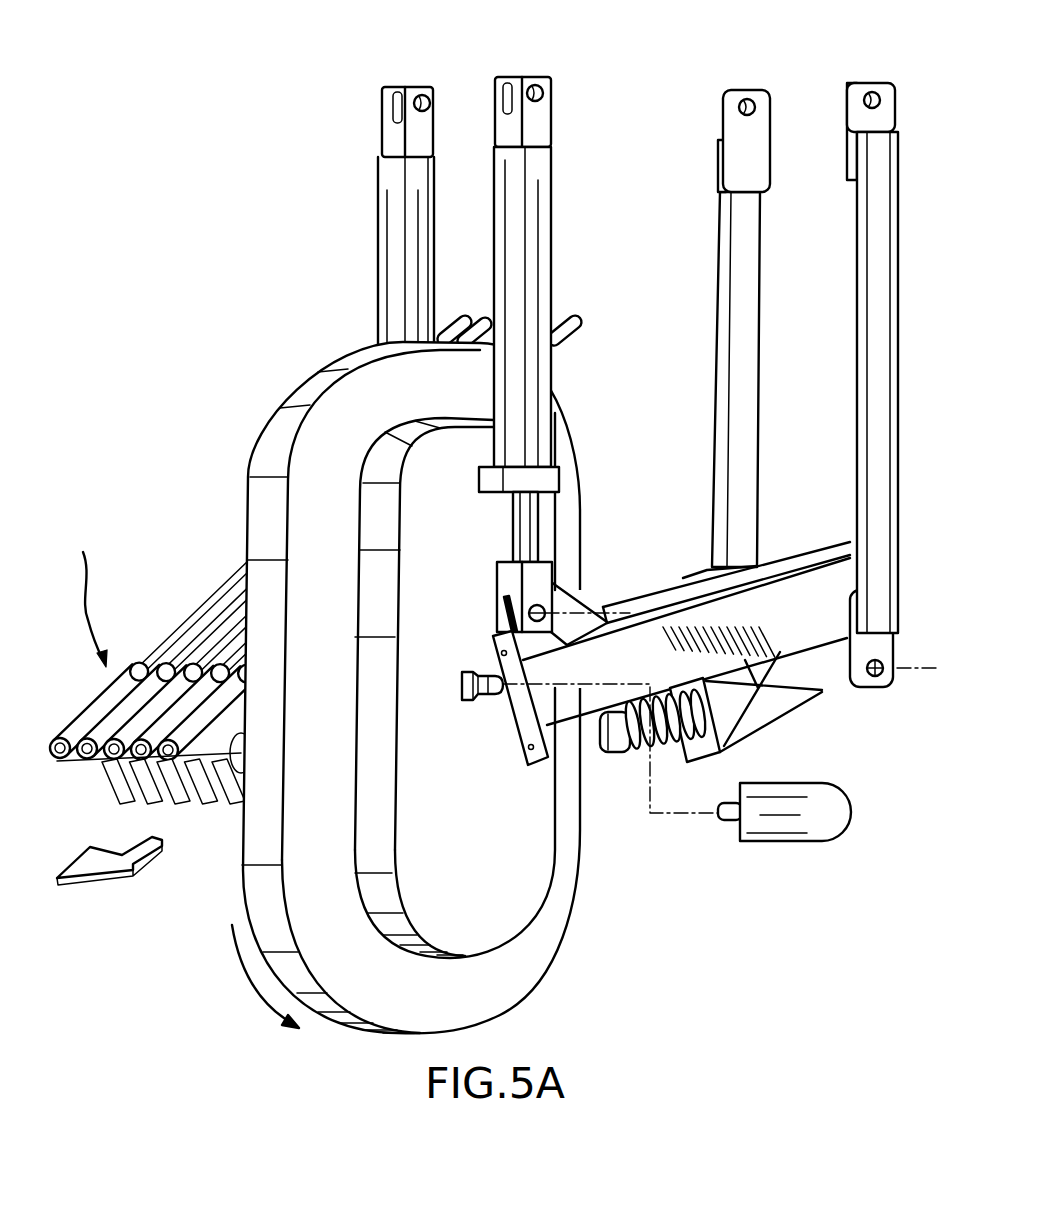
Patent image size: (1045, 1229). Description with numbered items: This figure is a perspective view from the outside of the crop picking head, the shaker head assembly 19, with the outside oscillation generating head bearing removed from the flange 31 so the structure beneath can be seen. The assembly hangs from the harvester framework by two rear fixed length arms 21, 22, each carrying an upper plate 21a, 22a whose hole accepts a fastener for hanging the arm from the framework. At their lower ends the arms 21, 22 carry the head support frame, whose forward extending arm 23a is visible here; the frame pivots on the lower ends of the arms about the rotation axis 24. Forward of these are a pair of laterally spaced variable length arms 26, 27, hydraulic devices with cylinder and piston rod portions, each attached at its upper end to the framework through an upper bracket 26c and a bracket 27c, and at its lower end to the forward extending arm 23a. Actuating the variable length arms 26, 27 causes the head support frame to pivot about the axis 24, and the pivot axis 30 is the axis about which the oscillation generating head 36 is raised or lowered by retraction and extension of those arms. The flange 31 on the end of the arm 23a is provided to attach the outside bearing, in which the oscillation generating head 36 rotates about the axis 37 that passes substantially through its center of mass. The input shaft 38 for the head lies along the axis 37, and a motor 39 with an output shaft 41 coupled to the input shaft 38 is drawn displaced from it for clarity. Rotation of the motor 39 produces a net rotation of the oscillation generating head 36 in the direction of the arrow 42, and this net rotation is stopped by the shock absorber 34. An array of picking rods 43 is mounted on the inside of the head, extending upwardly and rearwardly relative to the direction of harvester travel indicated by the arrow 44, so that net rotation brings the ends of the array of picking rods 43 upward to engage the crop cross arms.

The shaker head assembly 19 is at (491, 528).
The rear fixed length arm 21 is at (857, 400).
The upper plate 21a is at (747, 90).
The rear fixed length arm 22 is at (760, 300).
The upper plate 22a is at (873, 83).
The forward extending arm 23a is at (593, 707).
The rotation axis 24 is at (921, 667).
The front variable length arm 26 is at (552, 240).
The upper bracket 26c is at (551, 110).
The front variable length arm 27 is at (378, 257).
The bracket 27c is at (382, 130).
The pivot axis 30 is at (245, 622).
The flange 31 is at (545, 758).
The shock absorber 34 is at (650, 745).
The oscillation generating head 36 is at (330, 362).
The axis 37 is at (663, 815).
The input shaft 38 is at (470, 700).
The motor 39 is at (832, 827).
The output shaft 41 is at (733, 822).
The arrow 42 is at (250, 973).
The array of picking rods 43 is at (88, 592).
The arrow 44 is at (100, 884).